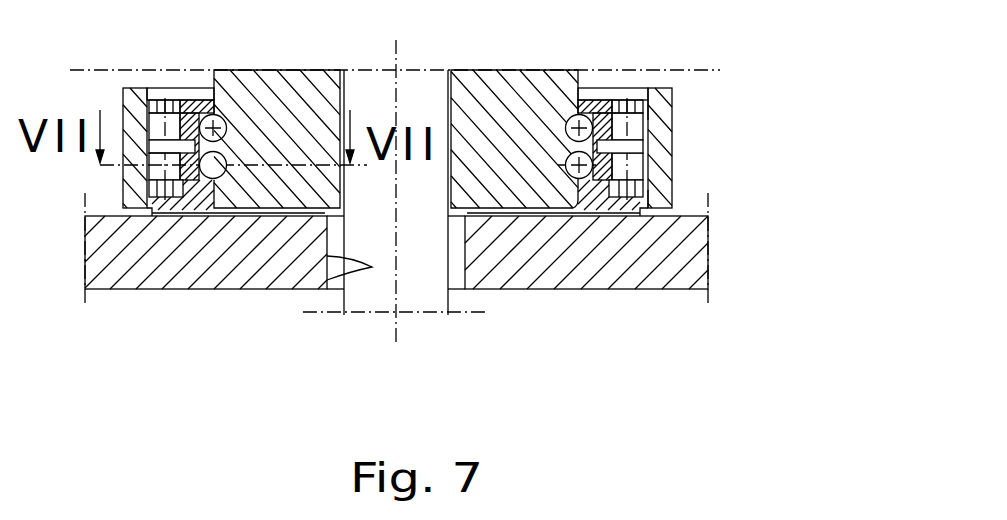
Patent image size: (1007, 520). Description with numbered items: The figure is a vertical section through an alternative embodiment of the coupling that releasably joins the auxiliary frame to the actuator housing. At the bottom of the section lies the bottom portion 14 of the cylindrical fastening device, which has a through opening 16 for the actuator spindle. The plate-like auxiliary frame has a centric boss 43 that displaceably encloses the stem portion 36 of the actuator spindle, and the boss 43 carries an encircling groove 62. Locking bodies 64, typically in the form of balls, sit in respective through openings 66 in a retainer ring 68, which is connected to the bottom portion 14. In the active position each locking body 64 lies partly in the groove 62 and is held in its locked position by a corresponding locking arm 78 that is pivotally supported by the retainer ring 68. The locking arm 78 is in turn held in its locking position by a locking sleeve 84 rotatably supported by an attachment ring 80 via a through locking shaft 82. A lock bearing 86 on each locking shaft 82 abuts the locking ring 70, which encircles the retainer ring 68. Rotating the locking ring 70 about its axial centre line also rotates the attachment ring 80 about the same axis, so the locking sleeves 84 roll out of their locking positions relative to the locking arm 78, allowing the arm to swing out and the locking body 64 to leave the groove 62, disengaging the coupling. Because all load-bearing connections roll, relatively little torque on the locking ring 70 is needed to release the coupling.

The bottom portion 14 is at (237, 273).
The through opening 16 is at (327, 288).
The stem portion 36 is at (425, 282).
The centric boss 43 is at (283, 108).
The encircling groove 62 is at (580, 172).
The locking body 64 is at (566, 123).
The through opening 66 is at (579, 116).
The retainer ring 68 is at (602, 203).
The locking ring 70 is at (660, 120).
The locking arm 78 is at (606, 128).
The attachment ring 80 is at (649, 114).
The locking shaft 82 is at (630, 107).
The locking sleeve 84 is at (648, 137).
The lock bearing 86 is at (648, 160).